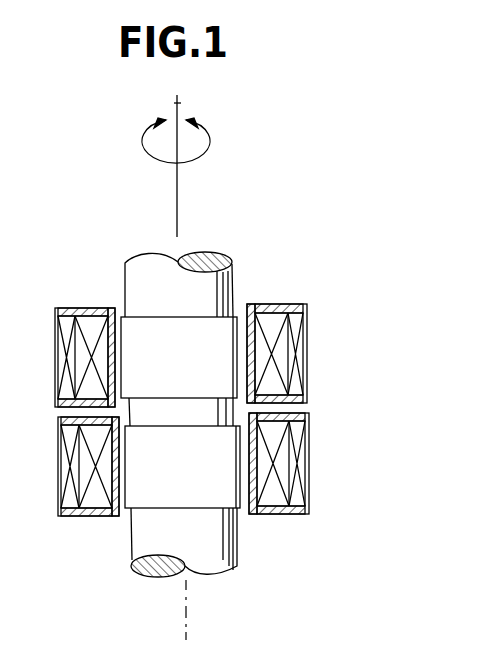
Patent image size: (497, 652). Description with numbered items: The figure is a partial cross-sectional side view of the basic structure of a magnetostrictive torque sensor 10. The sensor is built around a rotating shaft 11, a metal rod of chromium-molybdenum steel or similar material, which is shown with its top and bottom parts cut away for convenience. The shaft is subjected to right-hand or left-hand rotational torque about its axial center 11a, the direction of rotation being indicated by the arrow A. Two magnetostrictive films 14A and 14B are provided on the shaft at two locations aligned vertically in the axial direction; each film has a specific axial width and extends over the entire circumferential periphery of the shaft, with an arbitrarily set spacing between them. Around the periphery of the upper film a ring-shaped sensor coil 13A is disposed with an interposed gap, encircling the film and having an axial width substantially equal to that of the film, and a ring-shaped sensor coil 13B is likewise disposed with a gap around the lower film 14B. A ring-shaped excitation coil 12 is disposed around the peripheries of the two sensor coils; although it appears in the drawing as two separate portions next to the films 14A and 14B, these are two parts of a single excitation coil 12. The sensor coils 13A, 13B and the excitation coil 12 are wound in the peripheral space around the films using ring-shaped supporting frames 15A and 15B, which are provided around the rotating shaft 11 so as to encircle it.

The magnetostrictive torque sensor 10 is at (308, 228).
The rotating shaft 11 is at (233, 276).
The axial center 11a is at (181, 103).
The arrow A is at (210, 136).
The excitation coil 12 is at (312, 362).
The sensor coil 13A is at (272, 324).
The sensor coil 13B is at (274, 485).
The magnetostrictive film 14A is at (210, 330).
The magnetostrictive film 14B is at (213, 497).
The supporting frame 15A is at (86, 308).
The supporting frame 15B is at (86, 518).